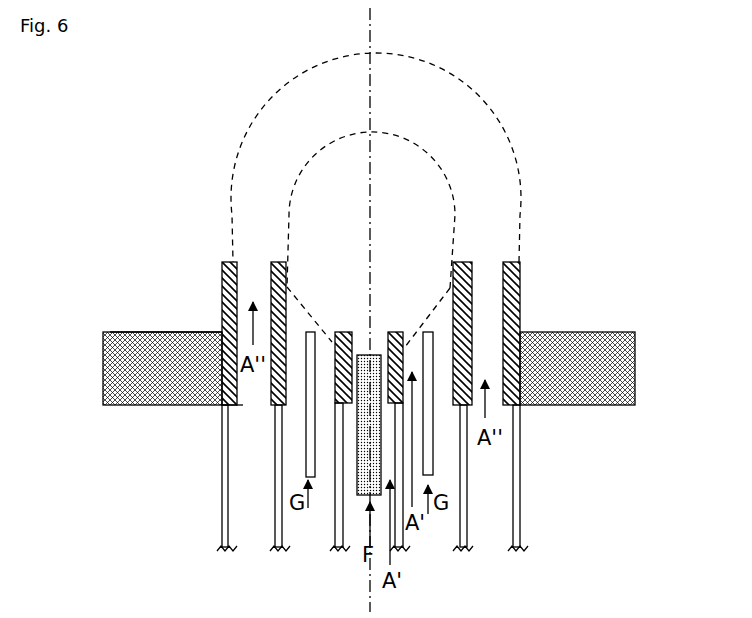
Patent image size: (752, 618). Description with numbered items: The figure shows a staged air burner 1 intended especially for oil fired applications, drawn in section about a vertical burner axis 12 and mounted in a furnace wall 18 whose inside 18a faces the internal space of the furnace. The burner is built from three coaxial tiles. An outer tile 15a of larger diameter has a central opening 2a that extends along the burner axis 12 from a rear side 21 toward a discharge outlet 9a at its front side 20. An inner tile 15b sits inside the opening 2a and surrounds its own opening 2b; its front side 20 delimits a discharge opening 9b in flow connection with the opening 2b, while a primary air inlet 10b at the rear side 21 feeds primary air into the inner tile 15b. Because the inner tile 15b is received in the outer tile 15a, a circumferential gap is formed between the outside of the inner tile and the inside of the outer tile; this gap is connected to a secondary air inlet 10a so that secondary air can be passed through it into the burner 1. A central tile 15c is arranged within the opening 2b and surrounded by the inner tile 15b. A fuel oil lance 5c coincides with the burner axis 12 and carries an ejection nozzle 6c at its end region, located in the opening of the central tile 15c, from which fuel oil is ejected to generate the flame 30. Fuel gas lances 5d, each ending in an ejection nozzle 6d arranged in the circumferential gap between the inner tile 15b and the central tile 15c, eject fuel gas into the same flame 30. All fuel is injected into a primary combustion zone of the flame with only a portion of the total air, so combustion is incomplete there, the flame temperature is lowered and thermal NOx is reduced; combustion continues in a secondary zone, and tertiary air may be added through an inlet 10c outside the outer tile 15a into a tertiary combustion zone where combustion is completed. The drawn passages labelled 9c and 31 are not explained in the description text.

The staged air burner 1 is at (115, 188).
The central opening of the outer tile 2a is at (520, 262).
The opening of the inner tile 2b is at (350, 332).
The fuel oil lance 5c is at (430, 474).
The fuel gas lances 5d is at (315, 410).
The ejection nozzle of the fuel oil lance 6c is at (368, 355).
The ejection nozzles of the fuel gas lances 6d is at (307, 332).
The discharge outlet of the outer tile 9a is at (254, 268).
The discharge opening of the inner tile 9b is at (413, 332).
The gap 9c is at (385, 335).
The secondary air inlet 10a is at (273, 405).
The primary air inlet 10b is at (302, 405).
The tertiary air inlet 10c is at (520, 357).
The burner axis 12 is at (372, 103).
The outer tile 15a is at (229, 262).
The inner tile 15b is at (277, 262).
The central tile 15c is at (340, 332).
The wall 18 is at (143, 357).
The inside of the wall 18a is at (183, 332).
The front side 20 is at (227, 262).
The rear side 21 is at (238, 405).
The flame 30 is at (455, 203).
The outer region 31 is at (460, 100).